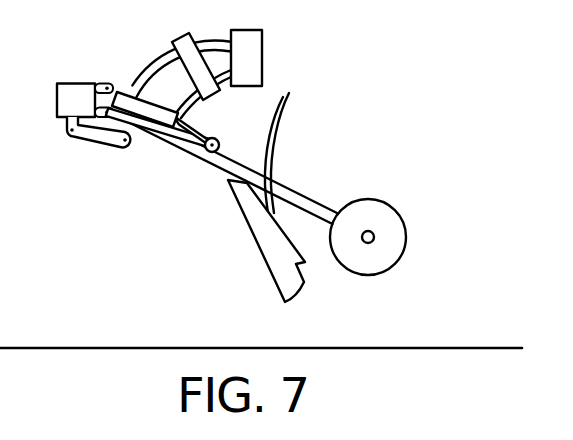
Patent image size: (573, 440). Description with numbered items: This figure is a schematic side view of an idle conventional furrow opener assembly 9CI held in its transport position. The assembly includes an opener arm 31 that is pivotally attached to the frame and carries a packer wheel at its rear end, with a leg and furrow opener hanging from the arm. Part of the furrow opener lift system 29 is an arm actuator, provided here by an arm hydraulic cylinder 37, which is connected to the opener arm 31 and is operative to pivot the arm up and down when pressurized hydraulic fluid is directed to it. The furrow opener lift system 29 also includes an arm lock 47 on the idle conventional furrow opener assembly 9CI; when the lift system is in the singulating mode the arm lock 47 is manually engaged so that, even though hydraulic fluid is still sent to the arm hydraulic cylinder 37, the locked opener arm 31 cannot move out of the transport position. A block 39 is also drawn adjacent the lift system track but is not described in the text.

The furrow opener lift system 29 is at (180, 38).
The drive unit 39 is at (262, 50).
The opener arm 31 is at (208, 164).
The arm hydraulic cylinder 37 is at (150, 133).
The arm lock 47 is at (98, 146).
The idle conventional furrow opener assembly 9CI is at (241, 156).